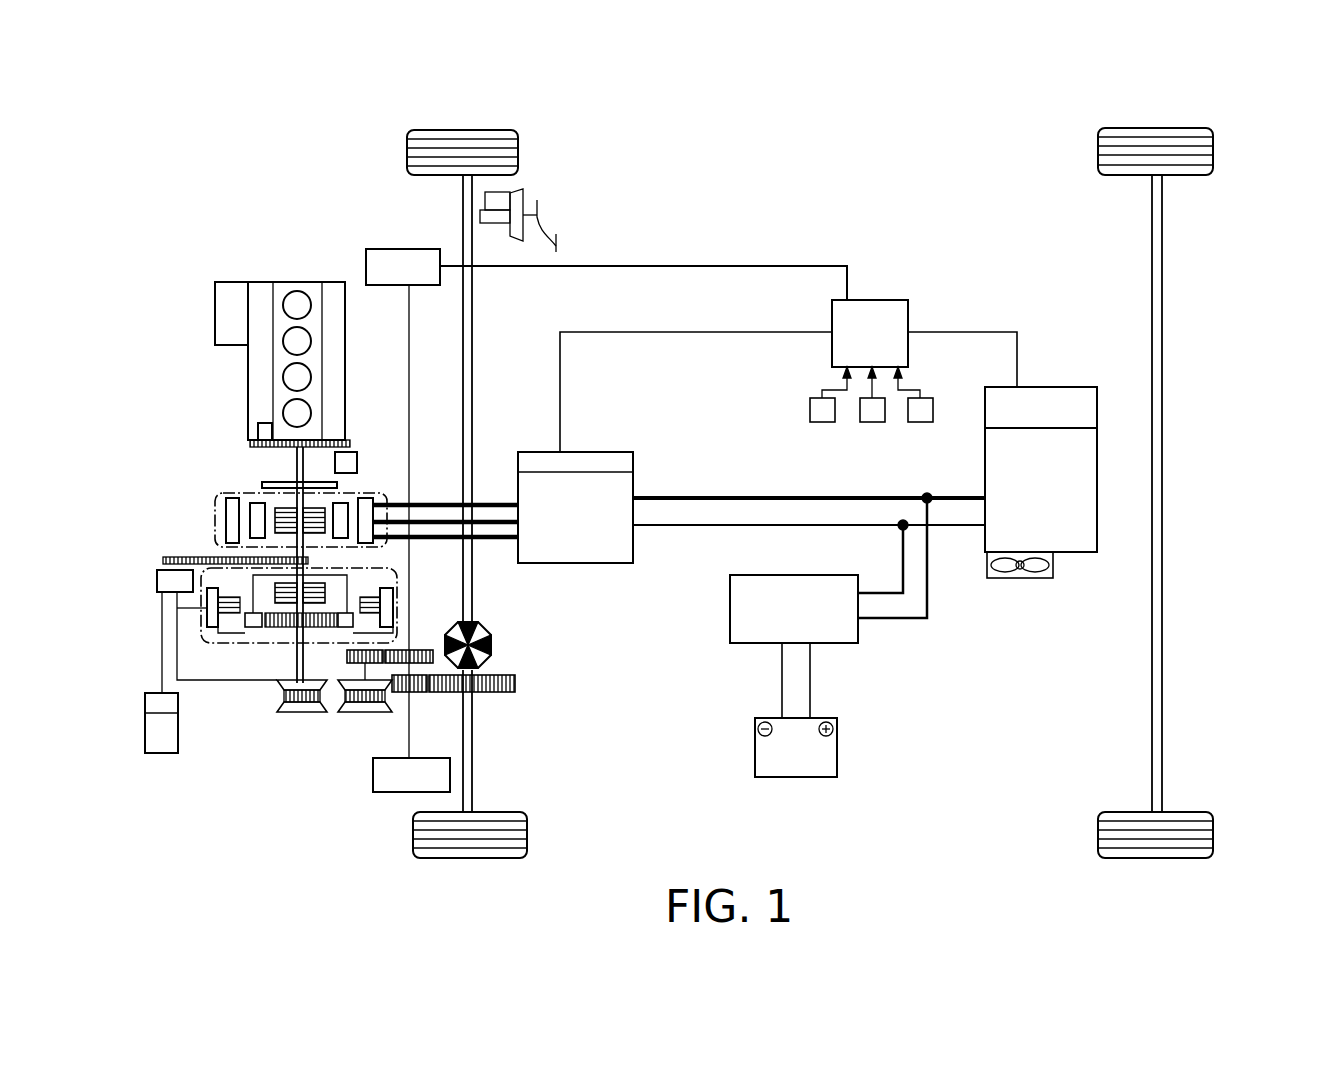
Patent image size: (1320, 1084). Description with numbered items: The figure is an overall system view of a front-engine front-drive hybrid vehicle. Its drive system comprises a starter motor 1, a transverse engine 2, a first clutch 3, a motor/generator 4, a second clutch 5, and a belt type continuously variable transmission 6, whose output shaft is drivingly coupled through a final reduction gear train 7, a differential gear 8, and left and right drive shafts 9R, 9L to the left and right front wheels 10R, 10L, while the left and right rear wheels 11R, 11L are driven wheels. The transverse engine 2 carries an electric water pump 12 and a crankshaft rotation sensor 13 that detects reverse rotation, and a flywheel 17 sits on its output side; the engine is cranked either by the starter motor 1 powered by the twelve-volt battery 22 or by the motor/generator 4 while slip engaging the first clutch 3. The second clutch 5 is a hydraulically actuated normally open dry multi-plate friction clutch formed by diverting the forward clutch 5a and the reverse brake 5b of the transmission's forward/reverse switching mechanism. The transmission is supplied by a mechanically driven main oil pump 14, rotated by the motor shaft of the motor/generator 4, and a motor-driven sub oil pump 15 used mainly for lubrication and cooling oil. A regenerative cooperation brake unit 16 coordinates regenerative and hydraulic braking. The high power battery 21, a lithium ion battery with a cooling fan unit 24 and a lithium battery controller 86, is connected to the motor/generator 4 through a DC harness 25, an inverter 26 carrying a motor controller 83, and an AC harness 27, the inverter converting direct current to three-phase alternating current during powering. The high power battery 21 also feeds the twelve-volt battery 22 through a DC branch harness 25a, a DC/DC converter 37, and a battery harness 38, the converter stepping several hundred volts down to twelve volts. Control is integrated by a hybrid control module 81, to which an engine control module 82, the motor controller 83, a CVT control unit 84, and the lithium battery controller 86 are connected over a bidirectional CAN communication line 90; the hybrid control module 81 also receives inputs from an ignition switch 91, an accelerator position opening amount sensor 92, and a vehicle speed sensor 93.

The starter motor 1 is at (348, 462).
The transverse engine 2 is at (316, 290).
The first clutch 3 is at (286, 512).
The motor/generator 4 is at (233, 522).
The second clutch 5 is at (213, 632).
The forward clutch 5a is at (318, 592).
The reverse brake 5b is at (229, 615).
The belt type continuously variable transmission 6 is at (303, 712).
The final reduction gear train 7 is at (421, 693).
The differential gear 8 is at (480, 636).
The right drive shaft 9R is at (473, 300).
The left drive shaft 9L is at (474, 776).
The right front wheel 10R is at (407, 152).
The left front wheel 10L is at (413, 836).
The right rear wheel 11R is at (1213, 148).
The left rear wheel 11L is at (1213, 835).
The electric water pump 12 is at (222, 296).
The crankshaft rotation sensor 13 is at (256, 432).
The main oil pump 14 is at (166, 580).
The sub oil pump 15 is at (162, 742).
The regenerative cooperation brake unit 16 is at (523, 200).
The flywheel 17 is at (284, 484).
The high power battery 21 is at (1090, 452).
The 12V battery 22 is at (768, 778).
The cooling fan unit 24 is at (1022, 572).
The DC harness 25 is at (688, 516).
The DC branch harness 25a is at (932, 594).
The inverter 26 is at (575, 563).
The AC harness 27 is at (446, 503).
The DC/DC converter 37 is at (730, 628).
The battery harness 38 is at (790, 680).
The hybrid control module 81 is at (872, 300).
The engine control module 82 is at (376, 249).
The motor controller 83 is at (520, 452).
The CVT control unit 84 is at (373, 780).
The lithium battery controller 86 is at (1084, 405).
The CAN communication line 90 is at (811, 332).
The ignition switch 91 is at (825, 422).
The accelerator position opening amount sensor 92 is at (873, 422).
The vehicle speed sensor 93 is at (921, 422).